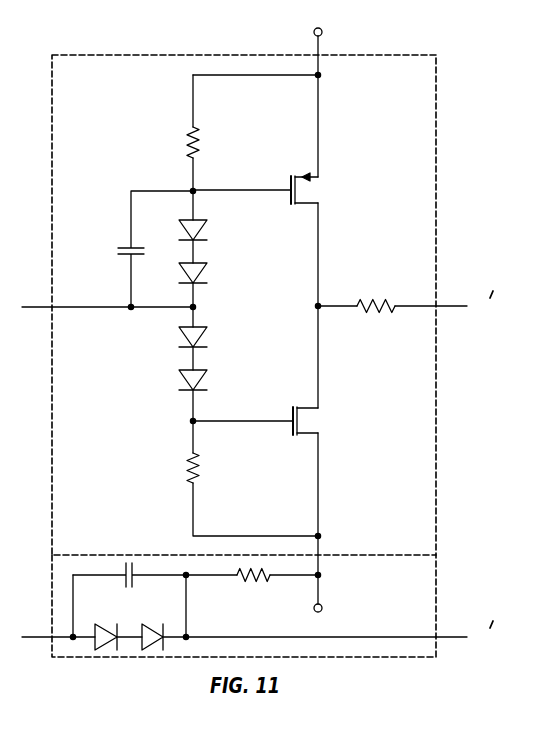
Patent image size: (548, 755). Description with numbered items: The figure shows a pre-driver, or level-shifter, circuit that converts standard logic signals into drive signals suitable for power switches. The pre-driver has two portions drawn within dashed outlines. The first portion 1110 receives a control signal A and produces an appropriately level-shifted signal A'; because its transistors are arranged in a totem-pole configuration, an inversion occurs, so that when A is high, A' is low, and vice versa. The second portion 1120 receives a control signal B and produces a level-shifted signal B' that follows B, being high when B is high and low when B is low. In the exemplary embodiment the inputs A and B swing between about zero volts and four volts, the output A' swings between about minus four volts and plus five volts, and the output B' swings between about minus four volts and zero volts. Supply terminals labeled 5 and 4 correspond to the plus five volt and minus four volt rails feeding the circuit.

The pre-driver portion 1110 is at (257, 287).
The pre-driver portion 1120 is at (258, 606).
The +5V supply terminal 5 is at (319, 37).
The -4V supply terminal 4 is at (339, 598).